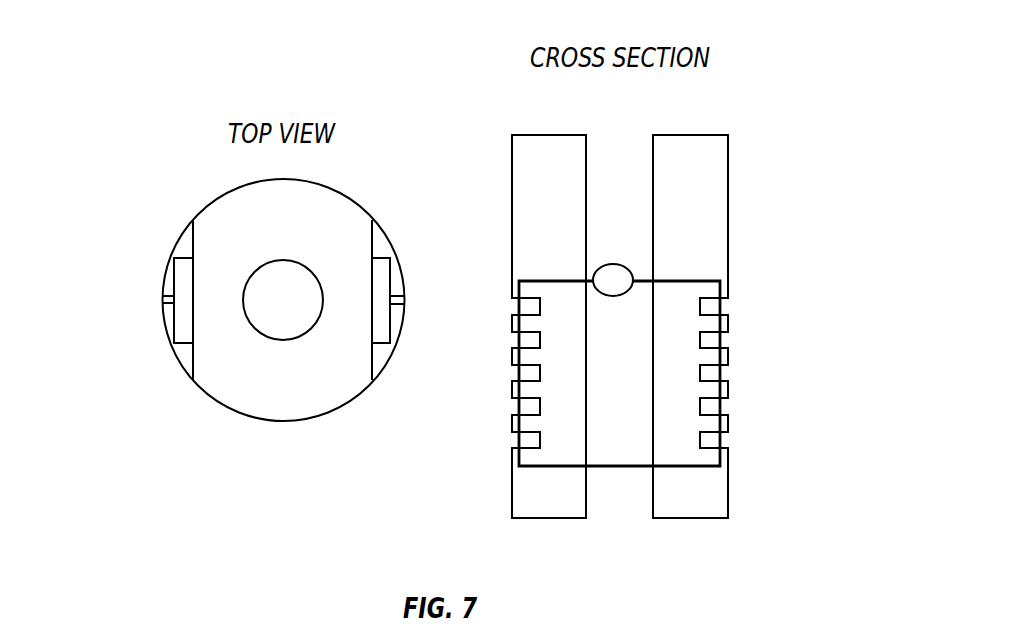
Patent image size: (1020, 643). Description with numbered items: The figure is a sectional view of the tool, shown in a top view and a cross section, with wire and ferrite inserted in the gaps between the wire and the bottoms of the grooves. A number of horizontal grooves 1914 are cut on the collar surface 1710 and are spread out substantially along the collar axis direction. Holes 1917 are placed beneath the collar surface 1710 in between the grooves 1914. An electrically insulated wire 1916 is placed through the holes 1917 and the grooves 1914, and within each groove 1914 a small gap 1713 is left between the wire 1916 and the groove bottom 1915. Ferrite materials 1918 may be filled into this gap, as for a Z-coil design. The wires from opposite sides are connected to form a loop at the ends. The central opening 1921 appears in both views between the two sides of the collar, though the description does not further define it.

The collar surface 1710 is at (325, 198).
The central bore 1921 is at (283, 268).
The holes 1917 is at (163, 302).
The ferrite materials 1918 is at (175, 263).
The electrically insulated wire 1916 is at (152, 297).
The horizontal grooves 1914 is at (388, 248).
The groove bottom 1915 is at (702, 402).
The gap 1713 is at (715, 308).